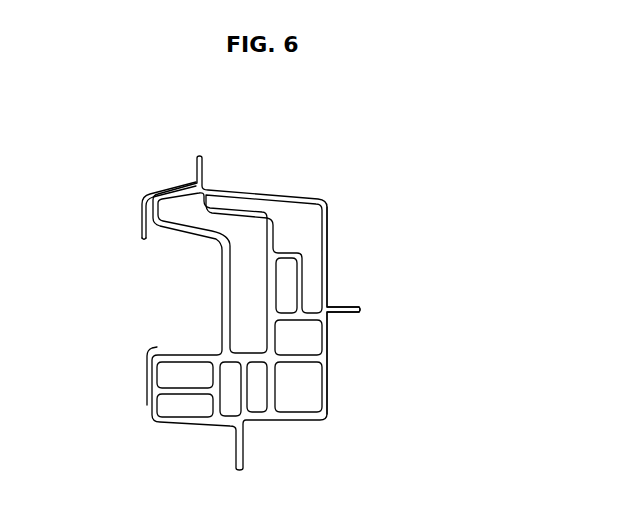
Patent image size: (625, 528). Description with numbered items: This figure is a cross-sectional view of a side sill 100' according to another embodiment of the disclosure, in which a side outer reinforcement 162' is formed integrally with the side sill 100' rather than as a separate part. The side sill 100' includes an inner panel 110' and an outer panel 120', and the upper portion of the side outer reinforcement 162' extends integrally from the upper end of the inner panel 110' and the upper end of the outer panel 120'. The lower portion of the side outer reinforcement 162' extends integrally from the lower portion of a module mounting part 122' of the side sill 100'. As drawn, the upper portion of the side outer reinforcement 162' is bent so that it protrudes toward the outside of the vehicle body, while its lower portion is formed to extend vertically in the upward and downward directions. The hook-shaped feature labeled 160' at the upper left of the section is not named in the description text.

The side sill 100' is at (254, 280).
The inner panel 110' is at (388, 280).
The outer panel 120' is at (264, 209).
The module mounting part 122' is at (217, 286).
The hook 160' is at (129, 194).
The side outer reinforcement 162' is at (182, 273).